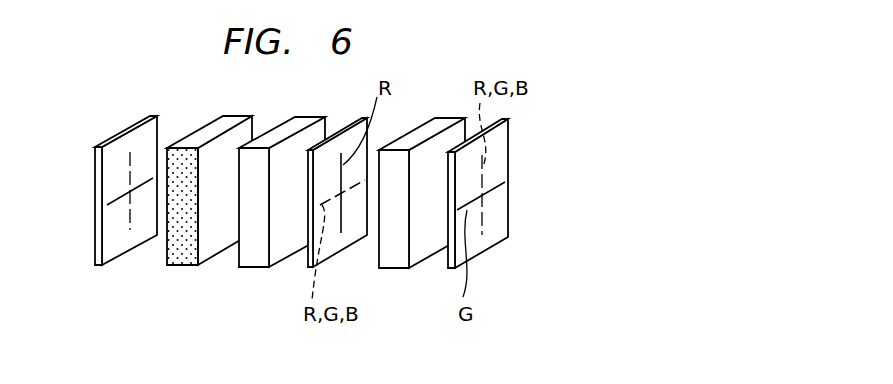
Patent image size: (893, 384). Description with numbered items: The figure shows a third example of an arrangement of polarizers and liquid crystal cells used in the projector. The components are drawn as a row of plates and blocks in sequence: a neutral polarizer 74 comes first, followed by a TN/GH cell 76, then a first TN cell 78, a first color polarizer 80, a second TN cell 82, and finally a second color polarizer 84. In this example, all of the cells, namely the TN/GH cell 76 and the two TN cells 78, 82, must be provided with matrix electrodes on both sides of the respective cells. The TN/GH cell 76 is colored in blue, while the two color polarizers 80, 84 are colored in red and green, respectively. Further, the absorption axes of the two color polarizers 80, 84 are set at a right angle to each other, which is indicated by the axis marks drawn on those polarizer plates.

The neutral polarizer 74 is at (98, 267).
The TN/GH cell 76 is at (228, 115).
The TN cell 78 is at (298, 113).
The color polarizer 80 is at (358, 117).
The TN cell 82 is at (438, 115).
The color polarizer 84 is at (495, 247).